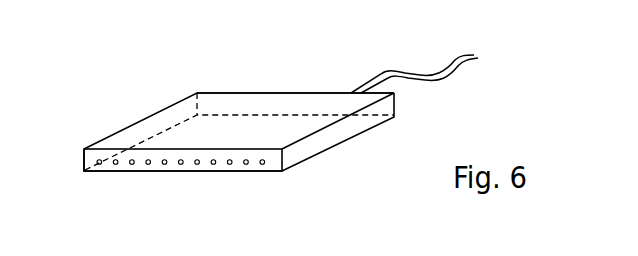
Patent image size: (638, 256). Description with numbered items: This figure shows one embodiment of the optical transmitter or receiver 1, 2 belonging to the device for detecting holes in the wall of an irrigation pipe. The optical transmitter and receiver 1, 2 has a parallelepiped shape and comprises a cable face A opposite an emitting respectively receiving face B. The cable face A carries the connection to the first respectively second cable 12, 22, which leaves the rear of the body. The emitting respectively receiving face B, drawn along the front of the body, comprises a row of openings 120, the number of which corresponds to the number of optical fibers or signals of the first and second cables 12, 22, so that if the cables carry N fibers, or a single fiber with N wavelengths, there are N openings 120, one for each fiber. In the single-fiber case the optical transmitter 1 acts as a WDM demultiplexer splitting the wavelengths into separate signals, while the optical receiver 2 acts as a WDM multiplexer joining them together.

The optical transmitter 1 is at (230, 136).
The optical receiver 2 is at (148, 128).
The first cable 12 is at (414, 61).
The second cable 22 is at (402, 70).
The openings 120 is at (197, 165).
The cable face A is at (253, 102).
The emitting respectively receiving face B is at (103, 163).